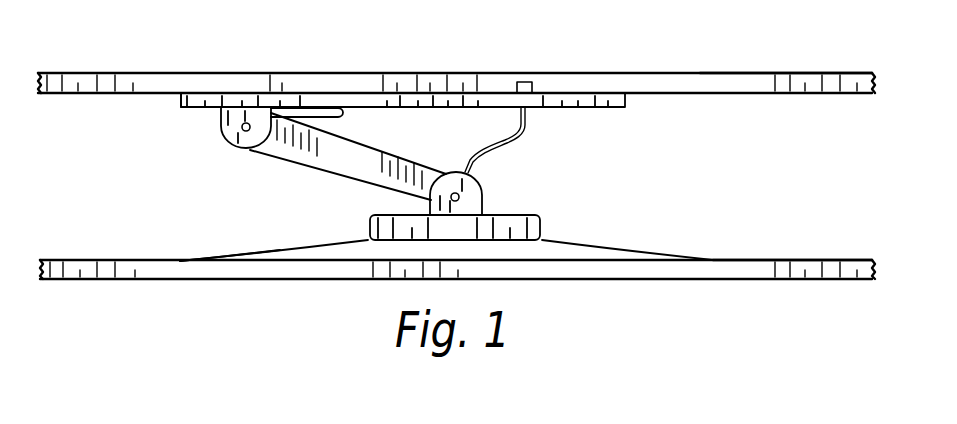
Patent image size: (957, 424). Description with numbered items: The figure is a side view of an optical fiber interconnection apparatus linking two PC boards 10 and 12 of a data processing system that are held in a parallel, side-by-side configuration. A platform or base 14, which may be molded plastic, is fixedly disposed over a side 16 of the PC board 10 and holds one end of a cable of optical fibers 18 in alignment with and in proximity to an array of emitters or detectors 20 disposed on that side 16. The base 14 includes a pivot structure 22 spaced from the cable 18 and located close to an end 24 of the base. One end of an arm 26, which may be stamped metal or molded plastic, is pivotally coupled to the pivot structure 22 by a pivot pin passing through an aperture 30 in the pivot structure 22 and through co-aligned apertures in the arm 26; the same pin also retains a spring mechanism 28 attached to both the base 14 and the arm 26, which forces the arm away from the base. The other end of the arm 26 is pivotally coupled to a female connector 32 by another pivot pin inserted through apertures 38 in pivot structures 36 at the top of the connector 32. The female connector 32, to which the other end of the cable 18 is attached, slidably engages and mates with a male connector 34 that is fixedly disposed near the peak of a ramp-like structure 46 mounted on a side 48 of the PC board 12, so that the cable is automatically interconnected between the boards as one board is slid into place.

The PC board 10 is at (817, 72).
The PC board 12 is at (810, 280).
The base 14 is at (627, 100).
The side of PC board 16 is at (803, 93).
The cable of optical fibers 18 is at (527, 130).
The array of emitters or detectors 20 is at (532, 88).
The pivot structure 22 is at (221, 126).
The end of base 24 is at (181, 99).
The arm 26 is at (288, 162).
The spring mechanism 28 is at (330, 120).
The aperture 30 is at (243, 128).
The female connector 32 is at (542, 222).
The male connector 34 is at (540, 241).
The pivot structure 36 is at (482, 195).
The aperture 38 is at (455, 197).
The ramp structure 46 is at (267, 248).
The side of PC board 48 is at (822, 260).